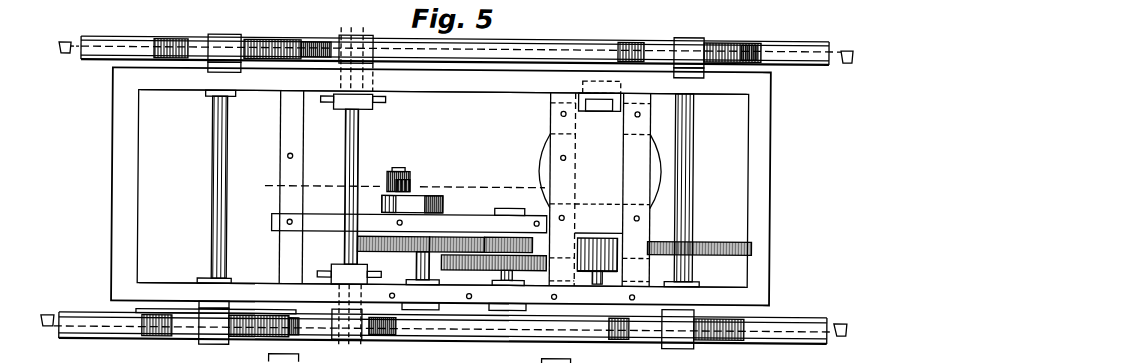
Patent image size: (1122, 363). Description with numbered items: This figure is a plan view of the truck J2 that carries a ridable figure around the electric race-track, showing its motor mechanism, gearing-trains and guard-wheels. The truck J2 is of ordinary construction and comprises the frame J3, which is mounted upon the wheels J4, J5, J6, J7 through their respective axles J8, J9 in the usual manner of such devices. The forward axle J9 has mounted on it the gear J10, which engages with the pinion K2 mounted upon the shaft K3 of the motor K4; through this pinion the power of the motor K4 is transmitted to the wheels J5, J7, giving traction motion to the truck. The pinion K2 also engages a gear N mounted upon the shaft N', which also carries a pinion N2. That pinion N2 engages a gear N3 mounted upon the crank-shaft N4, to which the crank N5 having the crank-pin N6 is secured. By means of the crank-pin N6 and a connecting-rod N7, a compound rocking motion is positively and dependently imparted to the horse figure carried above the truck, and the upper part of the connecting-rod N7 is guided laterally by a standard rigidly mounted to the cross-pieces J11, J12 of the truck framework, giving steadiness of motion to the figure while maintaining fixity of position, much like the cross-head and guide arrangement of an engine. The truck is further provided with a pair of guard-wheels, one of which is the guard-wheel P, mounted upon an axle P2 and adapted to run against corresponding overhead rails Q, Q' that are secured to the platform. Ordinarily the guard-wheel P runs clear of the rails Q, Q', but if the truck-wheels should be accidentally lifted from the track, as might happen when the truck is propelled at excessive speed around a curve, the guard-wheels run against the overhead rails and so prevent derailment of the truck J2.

The truck J2 is at (111, 192).
The frame J3 is at (443, 188).
The wheel J4 is at (174, 330).
The wheel J5 is at (652, 335).
The wheel J6 is at (181, 50).
The wheel J7 is at (648, 55).
The axle J8 is at (212, 176).
The forward axle J9 is at (694, 202).
The gear J10 is at (710, 241).
The cross-piece J11 is at (280, 138).
The cross-piece J12 is at (556, 118).
The pinion K2 is at (596, 240).
The shaft K3 is at (598, 283).
The motor K4 is at (618, 184).
The gear N is at (493, 270).
The shaft N' is at (505, 286).
The pinion N2 is at (506, 242).
The gear N3 is at (442, 229).
The crank-shaft N4 is at (418, 262).
The crank N5 is at (444, 203).
The crank-pin N6 is at (411, 194).
The connecting-rod N7 is at (388, 186).
The guard-wheel P is at (327, 50).
The axle P2 is at (345, 140).
The overhead rail Q is at (443, 339).
The overhead rail Q' is at (453, 65).